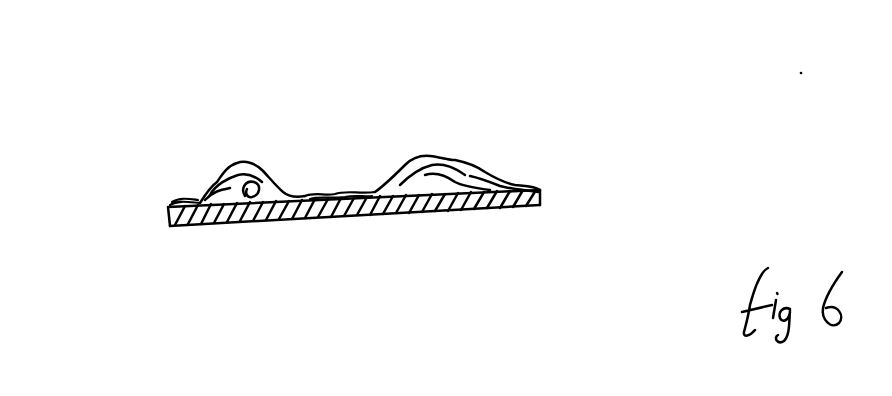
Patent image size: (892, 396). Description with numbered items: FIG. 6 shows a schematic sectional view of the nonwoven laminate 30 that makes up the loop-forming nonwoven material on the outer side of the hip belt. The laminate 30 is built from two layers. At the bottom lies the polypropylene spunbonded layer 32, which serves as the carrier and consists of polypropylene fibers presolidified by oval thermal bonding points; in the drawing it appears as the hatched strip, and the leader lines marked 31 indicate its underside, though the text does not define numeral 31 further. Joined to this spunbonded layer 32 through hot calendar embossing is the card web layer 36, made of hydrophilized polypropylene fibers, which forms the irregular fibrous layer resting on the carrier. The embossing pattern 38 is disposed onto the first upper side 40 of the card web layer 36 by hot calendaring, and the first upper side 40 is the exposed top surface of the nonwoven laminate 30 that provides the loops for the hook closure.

The nonwoven laminate 30 is at (195, 132).
The bottom surface of strip 31 is at (388, 288).
The polypropylene spunbonded layer 32 is at (155, 243).
The card web layer 36 is at (150, 221).
The embossing pattern 38 is at (352, 166).
The first upper side 40 is at (302, 162).